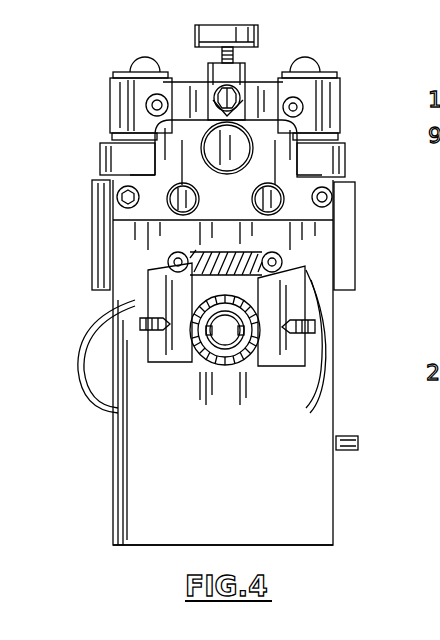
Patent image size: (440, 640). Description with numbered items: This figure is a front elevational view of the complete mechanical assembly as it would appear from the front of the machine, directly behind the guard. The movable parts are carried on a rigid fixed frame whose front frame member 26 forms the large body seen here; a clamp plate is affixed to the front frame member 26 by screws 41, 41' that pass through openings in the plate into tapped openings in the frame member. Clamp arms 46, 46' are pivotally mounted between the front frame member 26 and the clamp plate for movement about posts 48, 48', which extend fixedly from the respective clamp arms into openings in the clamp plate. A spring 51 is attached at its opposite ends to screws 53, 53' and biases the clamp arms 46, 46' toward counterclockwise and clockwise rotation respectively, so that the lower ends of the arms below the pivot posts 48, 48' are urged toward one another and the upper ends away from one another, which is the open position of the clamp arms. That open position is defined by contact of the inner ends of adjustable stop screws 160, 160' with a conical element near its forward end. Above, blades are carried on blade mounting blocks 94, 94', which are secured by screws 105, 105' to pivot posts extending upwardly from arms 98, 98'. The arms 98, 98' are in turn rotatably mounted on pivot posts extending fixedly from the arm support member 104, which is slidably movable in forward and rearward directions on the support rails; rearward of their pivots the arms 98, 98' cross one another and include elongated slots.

The front frame member 26 is at (135, 547).
The screw 41 is at (84, 193).
The screw 41' is at (365, 194).
The clamp arm 46 is at (199, 63).
The clamp arm 46' is at (243, 64).
The post 48 is at (112, 209).
The post 48' is at (330, 211).
The spring 51 is at (170, 290).
The screw 53 is at (151, 262).
The screw 53' is at (323, 286).
The blade mounting block 94 is at (101, 106).
The blade mounting block 94' is at (340, 108).
The arm 98 is at (85, 158).
The arm 98' is at (352, 159).
The arm support member 104 is at (352, 262).
The screw 105 is at (111, 52).
The screw 105' is at (332, 54).
The adjustable stop screw 160 is at (130, 369).
The adjustable stop screw 160' is at (292, 357).